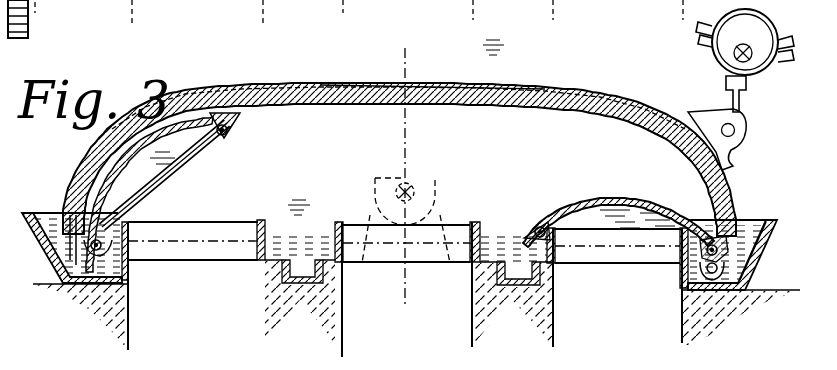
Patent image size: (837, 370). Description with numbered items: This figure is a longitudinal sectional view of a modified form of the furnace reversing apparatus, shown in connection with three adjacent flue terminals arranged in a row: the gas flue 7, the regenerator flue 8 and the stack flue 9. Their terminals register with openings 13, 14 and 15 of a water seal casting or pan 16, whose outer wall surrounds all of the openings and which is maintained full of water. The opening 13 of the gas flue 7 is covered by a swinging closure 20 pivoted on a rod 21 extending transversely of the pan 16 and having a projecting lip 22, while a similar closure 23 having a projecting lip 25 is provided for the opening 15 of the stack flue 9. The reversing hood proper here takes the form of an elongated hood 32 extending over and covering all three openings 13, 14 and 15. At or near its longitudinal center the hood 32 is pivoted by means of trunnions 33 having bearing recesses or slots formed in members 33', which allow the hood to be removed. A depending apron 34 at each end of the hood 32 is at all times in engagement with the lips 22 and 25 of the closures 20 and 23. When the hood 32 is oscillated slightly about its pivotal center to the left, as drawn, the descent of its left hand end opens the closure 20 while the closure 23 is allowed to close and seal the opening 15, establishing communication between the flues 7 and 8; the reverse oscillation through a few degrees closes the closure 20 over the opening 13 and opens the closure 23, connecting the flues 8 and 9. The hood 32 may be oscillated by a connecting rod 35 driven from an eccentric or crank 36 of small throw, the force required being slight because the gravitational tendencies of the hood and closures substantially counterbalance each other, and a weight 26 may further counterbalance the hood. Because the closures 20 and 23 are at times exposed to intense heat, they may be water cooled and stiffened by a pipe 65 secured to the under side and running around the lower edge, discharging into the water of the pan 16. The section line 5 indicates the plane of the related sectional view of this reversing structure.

The reversing structure 5 is at (407, 177).
The gas flue 7 is at (193, 285).
The regenerator flue 8 is at (407, 289).
The stack flue 9 is at (617, 287).
The opening 13 is at (266, 220).
The opening 14 is at (479, 220).
The opening 15 is at (562, 205).
The water seal casting or pan 16 is at (762, 240).
The swinging closure 20 is at (197, 117).
The rod 21 is at (100, 265).
The projecting lip 22 is at (74, 281).
The closure 23 is at (603, 198).
The projecting lip 25 is at (741, 282).
The weight 26 is at (30, 22).
The elongated hood 32 is at (552, 80).
The trunnions 33 is at (417, 202).
The members 33' is at (379, 159).
The depending apron 34 is at (62, 248).
The connecting rod 35 is at (741, 100).
The eccentric or crank 36 is at (755, 32).
The pipe 65 is at (225, 137).